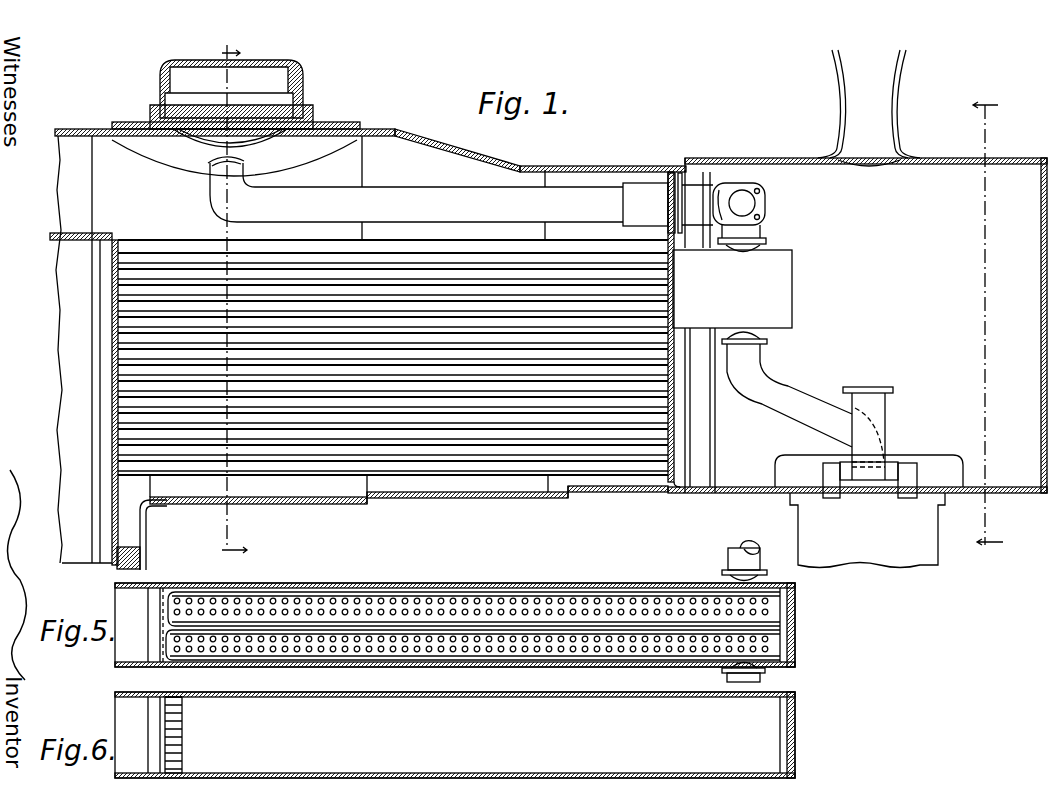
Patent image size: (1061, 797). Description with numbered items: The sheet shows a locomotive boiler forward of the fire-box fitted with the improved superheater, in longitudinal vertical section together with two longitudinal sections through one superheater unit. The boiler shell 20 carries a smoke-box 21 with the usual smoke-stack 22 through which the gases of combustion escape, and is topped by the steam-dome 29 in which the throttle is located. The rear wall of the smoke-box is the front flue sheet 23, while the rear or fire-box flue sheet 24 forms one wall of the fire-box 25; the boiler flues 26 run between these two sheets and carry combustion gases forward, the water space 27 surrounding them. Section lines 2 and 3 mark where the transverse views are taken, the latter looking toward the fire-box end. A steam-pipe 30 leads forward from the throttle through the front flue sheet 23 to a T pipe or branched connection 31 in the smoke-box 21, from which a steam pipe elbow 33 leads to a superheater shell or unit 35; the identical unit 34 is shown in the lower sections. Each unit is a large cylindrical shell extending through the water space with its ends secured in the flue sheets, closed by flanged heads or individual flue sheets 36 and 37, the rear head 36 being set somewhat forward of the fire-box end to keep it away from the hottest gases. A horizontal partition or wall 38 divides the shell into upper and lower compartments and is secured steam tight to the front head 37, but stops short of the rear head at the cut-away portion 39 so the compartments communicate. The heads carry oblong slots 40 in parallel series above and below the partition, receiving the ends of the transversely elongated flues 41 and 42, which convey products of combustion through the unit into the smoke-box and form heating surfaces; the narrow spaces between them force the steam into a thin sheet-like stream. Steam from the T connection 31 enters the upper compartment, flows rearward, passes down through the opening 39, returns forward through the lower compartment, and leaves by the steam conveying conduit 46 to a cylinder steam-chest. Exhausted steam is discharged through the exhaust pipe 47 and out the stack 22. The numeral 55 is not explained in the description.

In FIG. 1, the section line 2— 2 is at (987, 326).
In FIG. 1, the section line 3— 3 is at (231, 303).
In FIG. 1, the boiler shell 20 is at (529, 166).
In FIG. 1, the smoke-box 21 is at (794, 329).
In FIG. 1, the smoke-stack 22 is at (869, 108).
In FIG. 1, the front flue sheet 23 is at (666, 480).
In FIG. 1, the rear or fire-box flue sheet 24 is at (113, 505).
In FIG. 1, the fire-box 25 is at (203, 349).
In FIG. 1, the boiler flues 26 is at (188, 280).
In FIG. 1, the water space 27 is at (349, 488).
In FIG. 1, the steam-dome 29 is at (296, 84).
In FIG. 1, the steam-pipe or conduit 30 is at (330, 204).
In FIG. 1, the T pipe or branched connection 31 is at (718, 183).
In FIG. 1, the steam pipe elbow 33 is at (762, 235).
In FIG. 6, the superheater shell or unit 34 is at (245, 780).
In FIG. 1, the superheater shell or unit 35 is at (732, 368).
In FIG. 5, the rear flanged head or individual flue sheet 36 is at (160, 647).
In FIG. 5, the front flanged head or individual flue sheet 37 is at (783, 632).
In FIG. 6, the front flanged head or individual flue sheet 37 is at (788, 733).
In FIG. 5, the partition or wall 38 is at (504, 630).
In FIG. 6, the partition or wall 38 is at (412, 731).
In FIG. 5, the cut-away portion or passage 39 is at (178, 579).
In FIG. 6, the cut-away portion or passage 39 is at (190, 705).
In FIG. 6, the oblong slots 40 is at (168, 778).
In FIG. 5, the oblong flue 41 is at (473, 595).
In FIG. 5, the oblong flue 42 is at (603, 648).
In FIG. 6, the oblong flue 42 is at (193, 723).
In FIG. 1, the steam conveying conduit or pipe 46 is at (787, 389).
In FIG. 1, the exhaust pipe 47 is at (869, 477).
In FIG. 5, the pipe fitting 55 is at (703, 583).